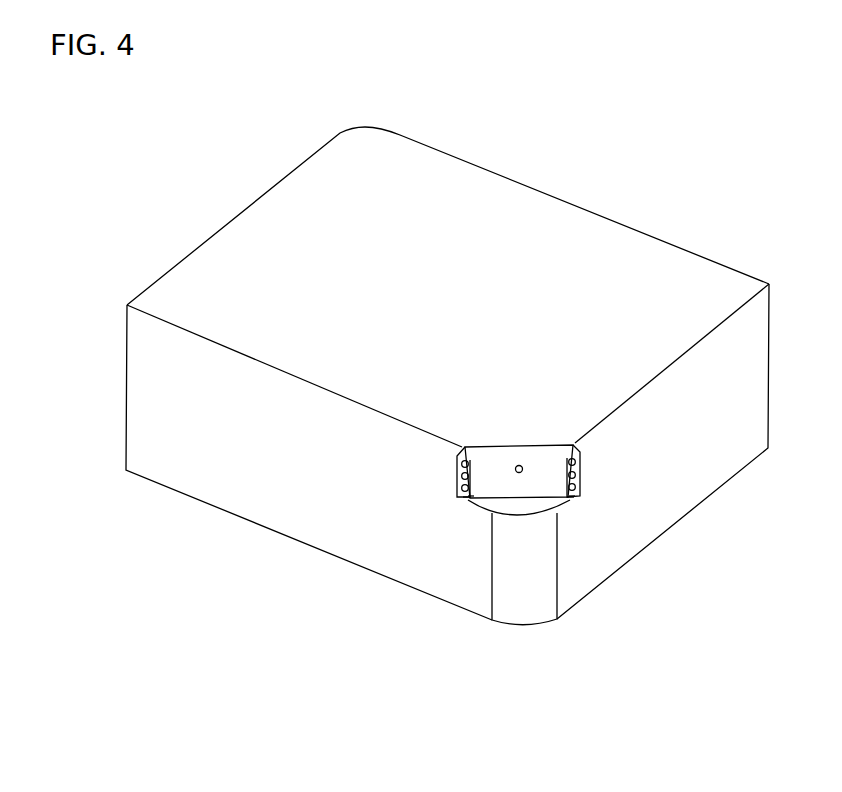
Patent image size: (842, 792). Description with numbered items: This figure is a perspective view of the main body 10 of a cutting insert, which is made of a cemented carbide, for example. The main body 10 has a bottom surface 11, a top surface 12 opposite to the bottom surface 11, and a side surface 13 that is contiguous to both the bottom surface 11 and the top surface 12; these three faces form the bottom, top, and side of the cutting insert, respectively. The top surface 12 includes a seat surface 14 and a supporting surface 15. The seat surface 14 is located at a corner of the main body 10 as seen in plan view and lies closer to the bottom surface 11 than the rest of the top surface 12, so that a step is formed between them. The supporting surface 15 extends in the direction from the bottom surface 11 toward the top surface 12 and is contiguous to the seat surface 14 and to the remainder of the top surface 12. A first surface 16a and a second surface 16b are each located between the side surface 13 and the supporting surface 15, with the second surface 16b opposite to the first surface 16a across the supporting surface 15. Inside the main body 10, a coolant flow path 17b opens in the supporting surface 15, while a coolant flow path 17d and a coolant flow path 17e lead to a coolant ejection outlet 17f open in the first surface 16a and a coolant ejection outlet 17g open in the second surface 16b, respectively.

The main body 10 is at (195, 207).
The bottom surface 11 is at (198, 502).
The top surface 12 is at (680, 285).
The side surface 13 is at (284, 510).
The seat surface 14 is at (543, 503).
The supporting surface 15 is at (493, 477).
The first surface 16a is at (460, 468).
The second surface 16b is at (583, 463).
The coolant flow path 17b is at (517, 463).
The coolant flow path 17d is at (460, 604).
The coolant flow path 17e is at (577, 604).
The coolant ejection outlet 17f is at (472, 500).
The coolant ejection outlet 17g is at (575, 497).